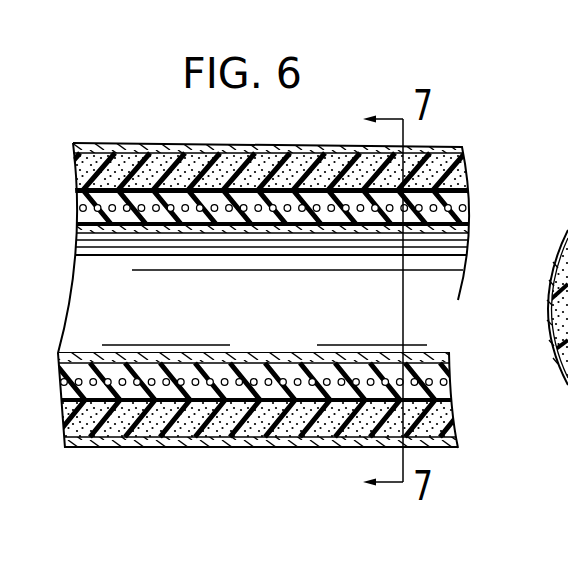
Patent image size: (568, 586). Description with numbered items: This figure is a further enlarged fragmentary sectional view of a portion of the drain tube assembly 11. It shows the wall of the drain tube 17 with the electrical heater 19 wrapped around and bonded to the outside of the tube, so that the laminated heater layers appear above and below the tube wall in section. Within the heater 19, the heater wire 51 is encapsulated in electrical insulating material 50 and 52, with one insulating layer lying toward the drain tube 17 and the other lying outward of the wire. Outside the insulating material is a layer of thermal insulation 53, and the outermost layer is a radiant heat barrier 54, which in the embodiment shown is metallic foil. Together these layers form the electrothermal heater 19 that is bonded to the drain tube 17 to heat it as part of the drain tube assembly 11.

The drain tube assembly 11 is at (281, 315).
The drain tube 17 is at (429, 243).
The electrothermal heater 19 is at (463, 365).
The electrical insulating material 50 is at (467, 223).
The heater wire 51 is at (466, 210).
The electrical insulating material 52 is at (452, 198).
The layer of thermal insulation 53 is at (185, 163).
The radiant heat barrier 54 is at (446, 150).